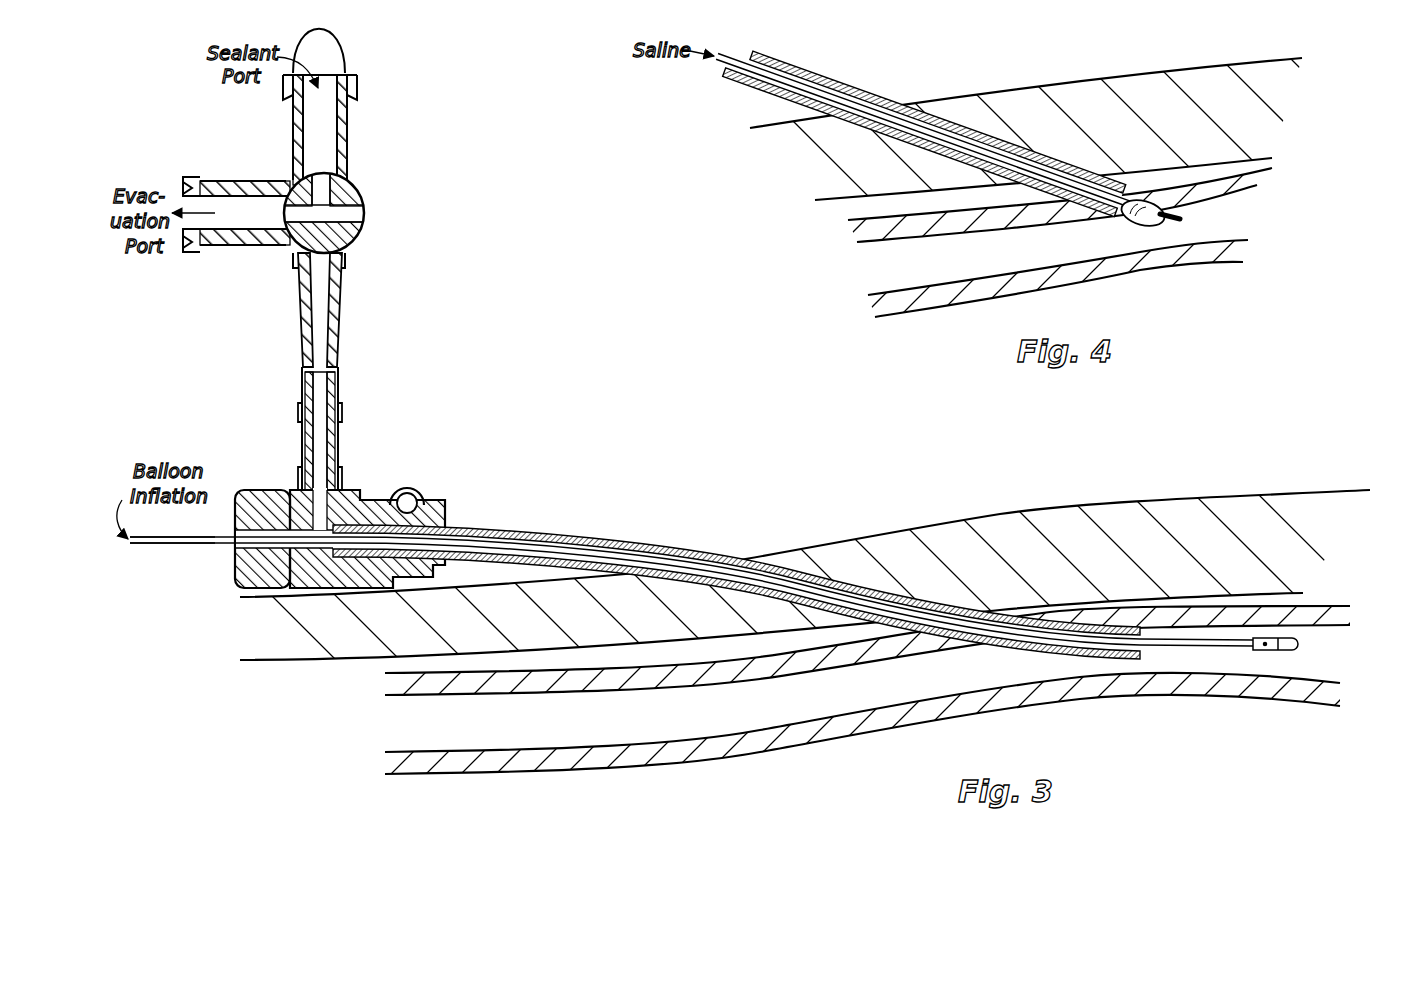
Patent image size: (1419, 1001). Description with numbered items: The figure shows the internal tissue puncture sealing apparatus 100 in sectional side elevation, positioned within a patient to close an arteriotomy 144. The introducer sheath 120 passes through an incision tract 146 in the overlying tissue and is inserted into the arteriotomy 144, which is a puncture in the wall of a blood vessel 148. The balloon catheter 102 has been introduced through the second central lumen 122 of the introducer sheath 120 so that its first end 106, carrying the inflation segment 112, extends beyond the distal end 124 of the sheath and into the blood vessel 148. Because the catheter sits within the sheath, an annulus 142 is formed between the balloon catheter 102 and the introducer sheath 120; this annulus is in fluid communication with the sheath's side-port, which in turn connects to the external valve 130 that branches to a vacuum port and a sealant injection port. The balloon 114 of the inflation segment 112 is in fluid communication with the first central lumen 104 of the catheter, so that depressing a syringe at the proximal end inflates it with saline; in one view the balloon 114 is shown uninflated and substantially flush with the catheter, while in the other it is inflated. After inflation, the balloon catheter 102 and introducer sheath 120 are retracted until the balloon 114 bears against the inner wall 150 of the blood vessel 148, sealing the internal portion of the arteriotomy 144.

In FIG. 3, the internal tissue puncture sealing apparatus 100 is at (441, 433).
In FIG. 3, the balloon catheter 102 is at (203, 557).
In FIG. 3, the first central lumen 104 is at (663, 563).
In FIG. 3, the first end 106 is at (691, 629).
In FIG. 3, the inflation segment 112 is at (1213, 658).
In FIG. 3, the balloon 114 is at (1273, 633).
In FIG. 4, the balloon 114 is at (1147, 220).
In FIG. 3, the introducer sheath 120 is at (443, 486).
In FIG. 3, the second central lumen 122 is at (613, 545).
In FIG. 3, the distal end 124 is at (763, 598).
In FIG. 3, the external valve 130 is at (363, 200).
In FIG. 3, the annulus 142 is at (478, 533).
In FIG. 3, the arteriotomy 144 is at (973, 650).
In FIG. 4, the arteriotomy 144 is at (1112, 224).
In FIG. 3, the incision tract 146 is at (868, 605).
In FIG. 4, the incision tract 146 is at (730, 58).
In FIG. 3, the blood vessel 148 is at (1353, 615).
In FIG. 4, the blood vessel 148 is at (1262, 177).
In FIG. 4, the inner wall 150 is at (1226, 197).